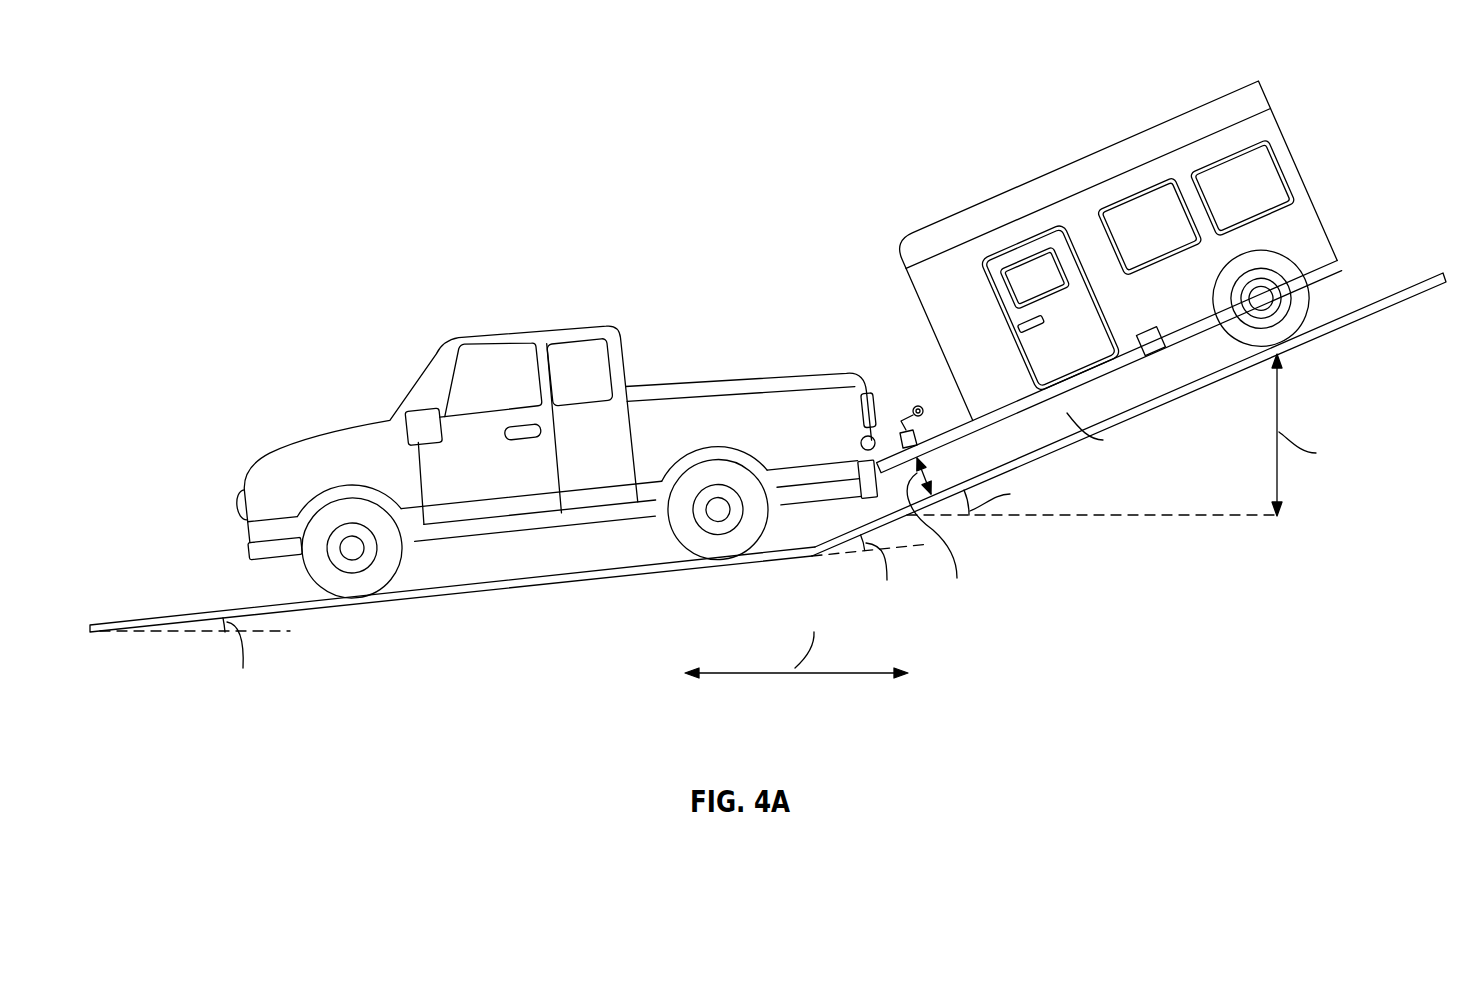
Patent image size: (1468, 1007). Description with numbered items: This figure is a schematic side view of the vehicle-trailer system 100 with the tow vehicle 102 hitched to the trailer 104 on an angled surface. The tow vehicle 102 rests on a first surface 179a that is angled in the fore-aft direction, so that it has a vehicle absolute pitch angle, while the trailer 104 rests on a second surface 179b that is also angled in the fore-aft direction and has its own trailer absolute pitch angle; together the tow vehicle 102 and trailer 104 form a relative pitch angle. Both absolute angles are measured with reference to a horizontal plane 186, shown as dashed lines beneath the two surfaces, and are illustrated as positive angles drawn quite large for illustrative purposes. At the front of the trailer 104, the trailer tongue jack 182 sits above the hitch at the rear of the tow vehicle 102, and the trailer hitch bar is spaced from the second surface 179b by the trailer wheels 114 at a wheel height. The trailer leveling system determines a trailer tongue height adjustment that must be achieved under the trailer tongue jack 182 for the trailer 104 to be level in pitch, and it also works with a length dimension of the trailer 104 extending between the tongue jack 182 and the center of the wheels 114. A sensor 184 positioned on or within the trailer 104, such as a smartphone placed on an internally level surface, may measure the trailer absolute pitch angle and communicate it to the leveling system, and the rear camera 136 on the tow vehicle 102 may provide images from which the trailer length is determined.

The vehicle-trailer system 100 is at (319, 125).
The tow vehicle 102 is at (440, 353).
The trailer 104 is at (1197, 106).
The trailer wheels 114 is at (1261, 298).
The rear camera 136 is at (861, 442).
The first surface 179a is at (122, 620).
The second surface 179b is at (1367, 316).
The trailer tongue jack 182 is at (914, 406).
The sensor 184 is at (1150, 341).
The horizontal plane 186 is at (177, 634).